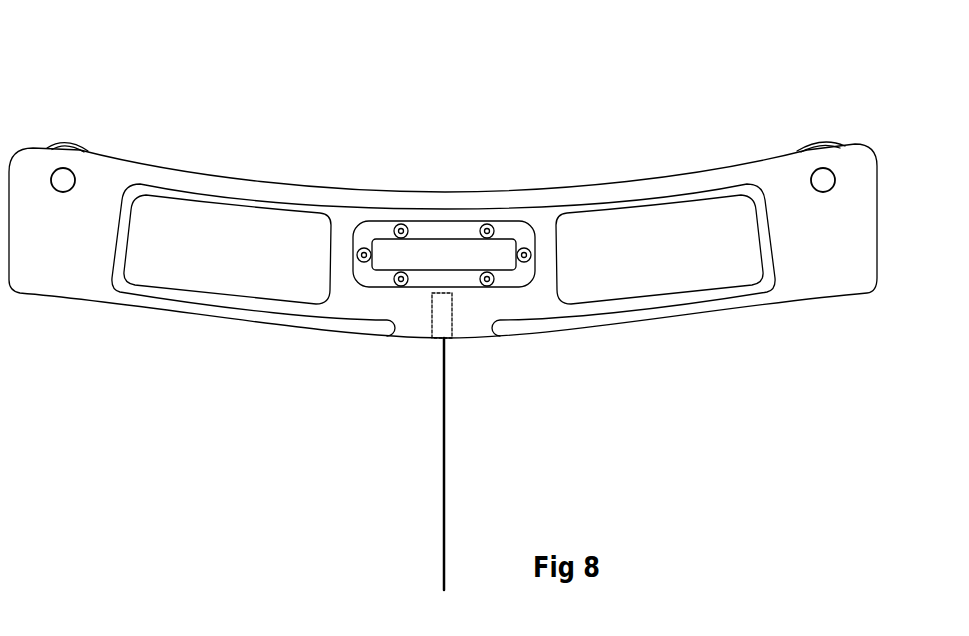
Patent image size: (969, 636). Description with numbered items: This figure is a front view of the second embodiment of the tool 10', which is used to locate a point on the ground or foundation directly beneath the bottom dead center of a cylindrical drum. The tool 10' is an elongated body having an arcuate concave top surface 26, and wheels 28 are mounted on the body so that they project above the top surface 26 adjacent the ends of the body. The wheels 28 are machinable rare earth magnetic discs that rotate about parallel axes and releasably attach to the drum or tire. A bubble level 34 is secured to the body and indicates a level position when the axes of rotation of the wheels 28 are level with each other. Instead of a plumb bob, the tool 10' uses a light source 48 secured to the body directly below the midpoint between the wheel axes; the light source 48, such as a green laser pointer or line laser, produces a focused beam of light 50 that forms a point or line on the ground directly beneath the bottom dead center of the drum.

The tool 10' is at (556, 118).
The concave top surface 26 is at (244, 183).
The wheels 28 is at (77, 148).
The bubble level 34 is at (383, 240).
The light source 48 is at (453, 316).
The focused beam of light 50 is at (444, 447).